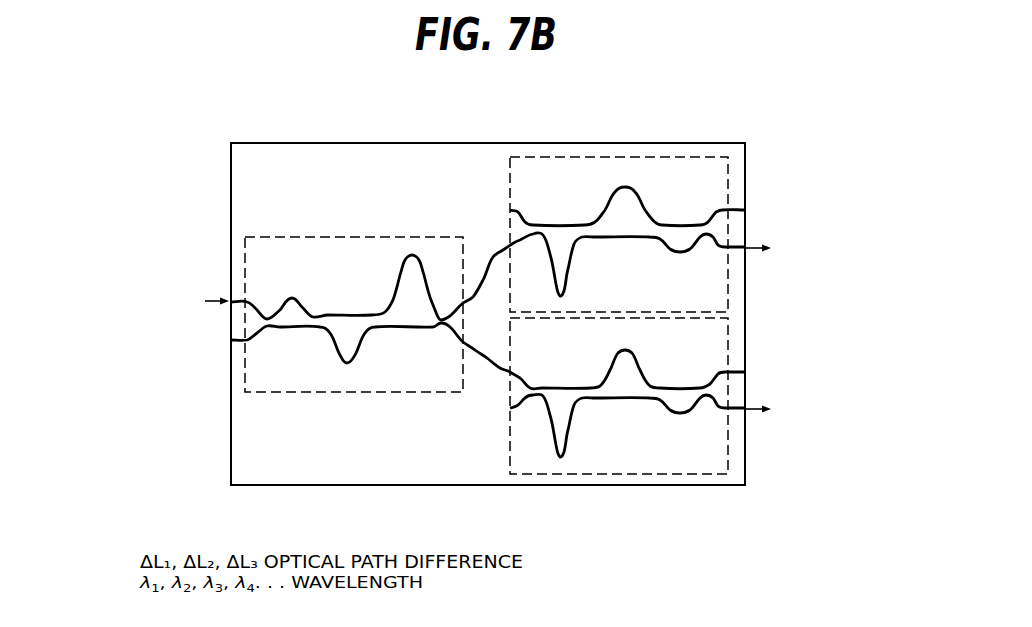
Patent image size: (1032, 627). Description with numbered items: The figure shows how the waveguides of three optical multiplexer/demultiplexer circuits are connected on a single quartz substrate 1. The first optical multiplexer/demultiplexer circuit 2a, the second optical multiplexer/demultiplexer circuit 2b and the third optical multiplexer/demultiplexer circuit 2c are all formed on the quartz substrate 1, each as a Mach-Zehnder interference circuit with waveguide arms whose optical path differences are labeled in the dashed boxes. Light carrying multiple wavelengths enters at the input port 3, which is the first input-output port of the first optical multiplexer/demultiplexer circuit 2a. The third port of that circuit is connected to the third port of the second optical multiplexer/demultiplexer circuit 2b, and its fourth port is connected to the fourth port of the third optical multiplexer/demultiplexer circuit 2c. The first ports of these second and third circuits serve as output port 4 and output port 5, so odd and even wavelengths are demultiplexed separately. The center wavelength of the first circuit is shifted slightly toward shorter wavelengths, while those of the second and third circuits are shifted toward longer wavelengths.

The quartz substrate 1 is at (268, 480).
The first optical multiplexer/demultiplexer circuit 2a is at (342, 236).
The second optical multiplexer/demultiplexer circuit 2b is at (703, 157).
The third optical multiplexer/demultiplexer circuit 2c is at (583, 473).
The input port 3 is at (229, 299).
The output port 4 is at (752, 257).
The output port 5 is at (750, 416).